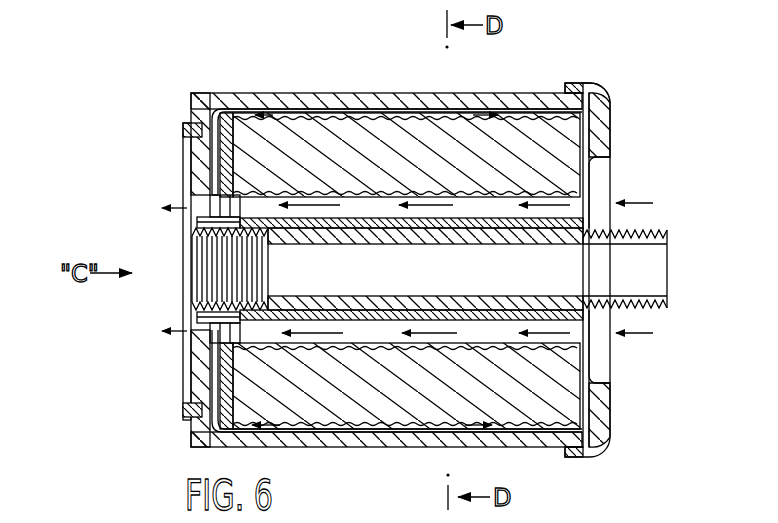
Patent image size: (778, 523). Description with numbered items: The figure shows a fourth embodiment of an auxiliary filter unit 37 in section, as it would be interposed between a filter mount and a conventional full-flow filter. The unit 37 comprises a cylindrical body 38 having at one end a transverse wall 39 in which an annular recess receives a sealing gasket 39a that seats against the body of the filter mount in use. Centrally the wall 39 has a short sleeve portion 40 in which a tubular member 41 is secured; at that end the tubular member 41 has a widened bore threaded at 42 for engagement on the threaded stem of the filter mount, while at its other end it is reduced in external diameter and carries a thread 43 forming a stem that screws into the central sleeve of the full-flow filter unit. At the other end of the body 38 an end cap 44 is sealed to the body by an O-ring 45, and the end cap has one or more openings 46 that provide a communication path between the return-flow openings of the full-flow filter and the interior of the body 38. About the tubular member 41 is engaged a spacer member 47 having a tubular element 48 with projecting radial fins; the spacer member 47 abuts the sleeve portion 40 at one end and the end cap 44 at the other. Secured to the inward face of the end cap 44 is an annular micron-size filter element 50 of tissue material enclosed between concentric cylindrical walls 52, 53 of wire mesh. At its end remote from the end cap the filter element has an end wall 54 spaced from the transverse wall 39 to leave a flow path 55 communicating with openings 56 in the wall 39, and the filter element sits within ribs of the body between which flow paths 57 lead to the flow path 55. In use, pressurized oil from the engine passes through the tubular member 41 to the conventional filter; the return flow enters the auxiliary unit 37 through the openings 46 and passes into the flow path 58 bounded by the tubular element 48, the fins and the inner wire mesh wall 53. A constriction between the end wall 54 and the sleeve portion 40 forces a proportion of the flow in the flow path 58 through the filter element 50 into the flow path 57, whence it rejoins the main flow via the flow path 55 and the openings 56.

The auxiliary filter unit 37 is at (518, 86).
The cylindrical body 38 is at (470, 101).
The transverse wall 39 is at (197, 170).
The sealing gasket 39a is at (183, 124).
The short sleeve portion 40 is at (195, 223).
The tubular member 41 is at (322, 235).
The thread 42 is at (230, 289).
The thread 43 is at (658, 224).
The end cap 44 is at (618, 253).
The O-ring 45 is at (584, 89).
The opening 46 is at (599, 164).
The spacer member 47 is at (574, 212).
The tubular element 48 is at (455, 223).
The filter element 50 is at (247, 114).
The outer cylindrical wall of wire mesh 52 is at (372, 120).
The inner cylindrical wall of wire mesh 53 is at (503, 189).
The end wall 54 is at (221, 112).
The flow path 55 is at (214, 142).
The openings 56 is at (180, 194).
The flow paths 57 is at (351, 113).
The flow path 58 is at (378, 322).